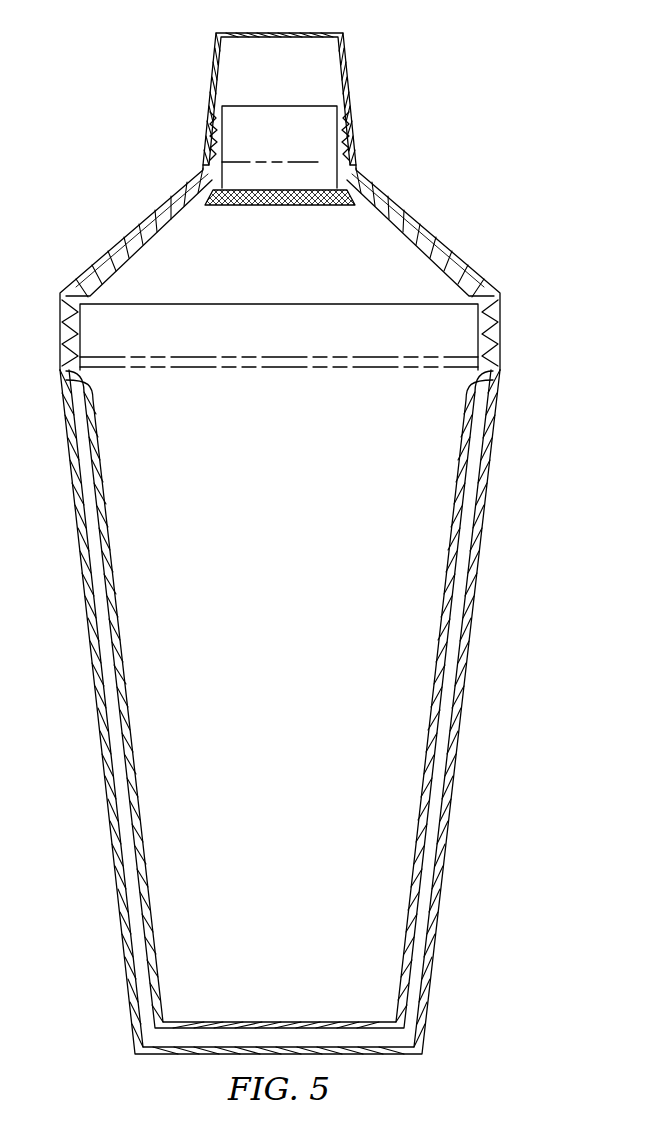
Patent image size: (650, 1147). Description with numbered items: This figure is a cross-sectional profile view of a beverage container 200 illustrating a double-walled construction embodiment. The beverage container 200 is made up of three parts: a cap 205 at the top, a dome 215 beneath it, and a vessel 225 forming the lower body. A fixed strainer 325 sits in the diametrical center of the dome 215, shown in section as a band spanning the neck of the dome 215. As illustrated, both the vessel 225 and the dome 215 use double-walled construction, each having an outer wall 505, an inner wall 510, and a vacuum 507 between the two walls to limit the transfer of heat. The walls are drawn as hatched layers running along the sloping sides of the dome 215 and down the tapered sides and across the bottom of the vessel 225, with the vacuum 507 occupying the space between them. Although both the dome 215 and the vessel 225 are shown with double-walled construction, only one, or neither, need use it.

The beverage container 200 is at (124, 102).
The cap 205 is at (352, 62).
The dome 215 is at (427, 220).
The vessel 225 is at (252, 602).
The fixed strainer 325 is at (303, 208).
The outer wall 505 is at (190, 188).
The vacuum 507 is at (158, 228).
The inner wall 510 is at (180, 224).